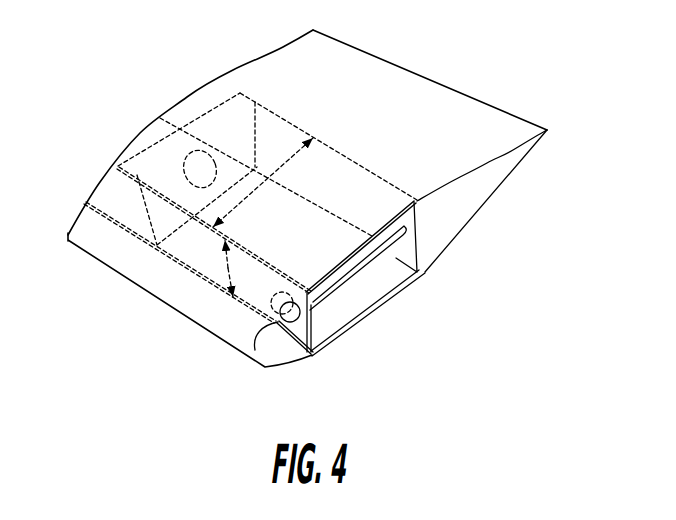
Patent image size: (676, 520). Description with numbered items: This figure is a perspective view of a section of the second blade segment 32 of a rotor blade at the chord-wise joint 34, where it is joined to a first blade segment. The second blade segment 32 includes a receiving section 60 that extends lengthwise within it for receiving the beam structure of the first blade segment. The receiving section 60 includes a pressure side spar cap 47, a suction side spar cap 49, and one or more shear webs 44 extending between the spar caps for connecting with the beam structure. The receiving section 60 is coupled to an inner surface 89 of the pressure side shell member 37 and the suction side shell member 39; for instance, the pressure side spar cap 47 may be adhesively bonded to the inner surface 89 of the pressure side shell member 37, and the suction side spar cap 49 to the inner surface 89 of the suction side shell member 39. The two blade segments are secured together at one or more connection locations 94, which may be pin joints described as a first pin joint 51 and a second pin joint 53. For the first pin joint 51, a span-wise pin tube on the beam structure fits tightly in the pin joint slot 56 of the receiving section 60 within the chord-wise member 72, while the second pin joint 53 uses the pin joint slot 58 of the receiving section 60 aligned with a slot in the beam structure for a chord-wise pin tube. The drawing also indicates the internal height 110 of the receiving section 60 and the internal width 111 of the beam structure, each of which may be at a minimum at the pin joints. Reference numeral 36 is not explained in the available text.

The second blade segment 32 is at (395, 62).
The chord-wise joint 34 is at (278, 355).
The internal cooling passage 36 is at (341, 147).
The pressure side shell member 37 is at (500, 180).
The suction side shell member 39 is at (283, 48).
The shear web 44 is at (417, 233).
The pressure side spar cap 47 is at (324, 355).
The suction side spar cap 49 is at (327, 277).
The first pin joint 51 is at (135, 215).
The second pin joint 53 is at (340, 310).
The pin joint slot 56 is at (185, 187).
The pin joint slot 58 is at (350, 274).
The receiving section 60 is at (388, 287).
The chord-wise member 72 is at (167, 165).
The inner surface 89 is at (485, 161).
The connection location 94 is at (200, 100).
The internal height 110 is at (228, 268).
The internal width 111 is at (250, 197).